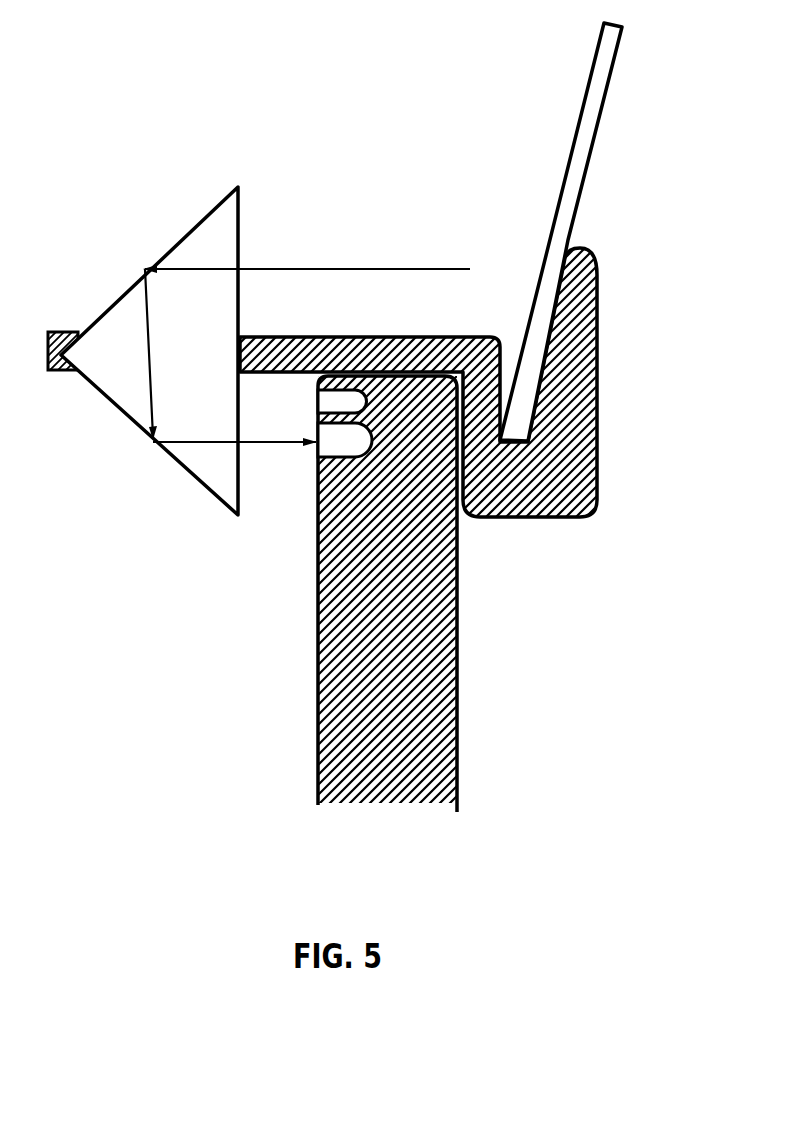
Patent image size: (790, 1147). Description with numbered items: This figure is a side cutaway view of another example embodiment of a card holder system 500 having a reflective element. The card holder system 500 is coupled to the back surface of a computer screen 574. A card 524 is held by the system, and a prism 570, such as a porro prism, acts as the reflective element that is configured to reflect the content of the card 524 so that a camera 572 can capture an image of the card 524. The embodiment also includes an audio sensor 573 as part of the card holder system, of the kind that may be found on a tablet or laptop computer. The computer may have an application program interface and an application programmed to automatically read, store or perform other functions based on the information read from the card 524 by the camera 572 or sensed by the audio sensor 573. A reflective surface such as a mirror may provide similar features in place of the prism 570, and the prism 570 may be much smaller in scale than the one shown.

The card holder system 500 is at (624, 440).
The card 524 is at (577, 145).
The prism 570 is at (93, 402).
The camera 572 is at (353, 433).
The audio sensor 573 is at (346, 400).
The computer screen 574 is at (333, 720).